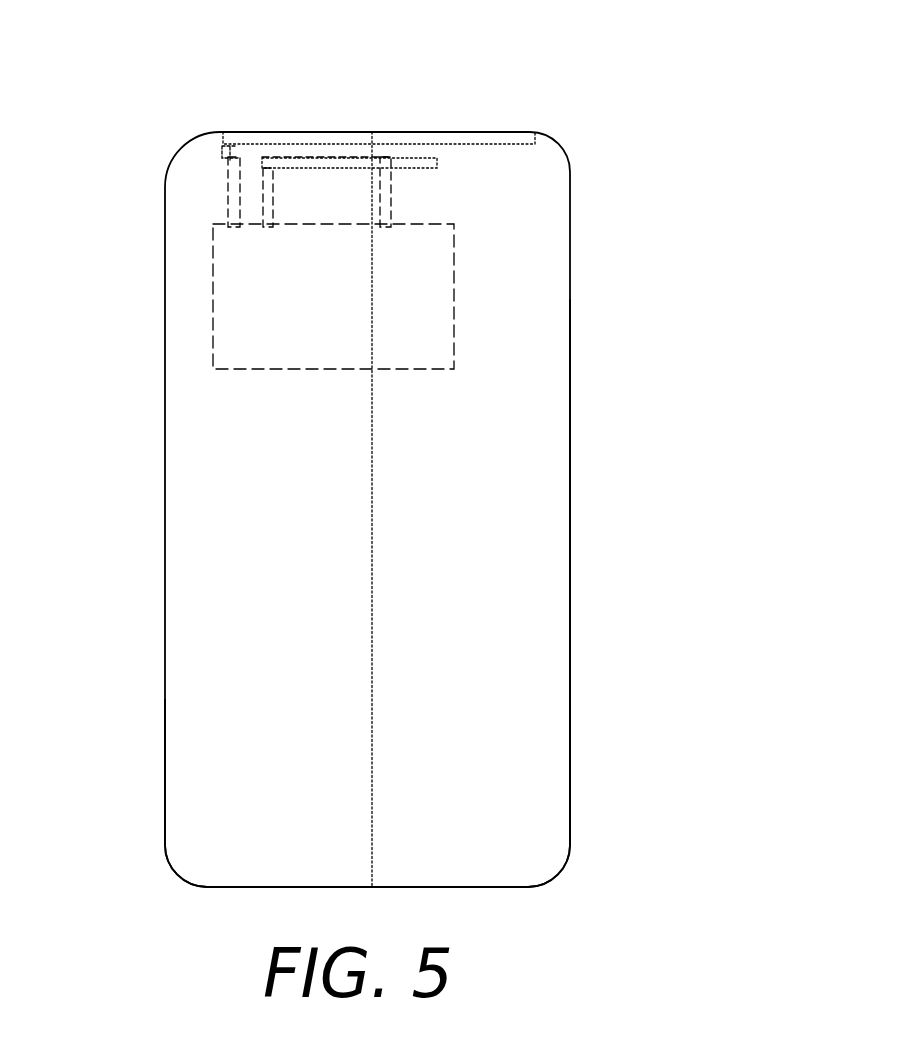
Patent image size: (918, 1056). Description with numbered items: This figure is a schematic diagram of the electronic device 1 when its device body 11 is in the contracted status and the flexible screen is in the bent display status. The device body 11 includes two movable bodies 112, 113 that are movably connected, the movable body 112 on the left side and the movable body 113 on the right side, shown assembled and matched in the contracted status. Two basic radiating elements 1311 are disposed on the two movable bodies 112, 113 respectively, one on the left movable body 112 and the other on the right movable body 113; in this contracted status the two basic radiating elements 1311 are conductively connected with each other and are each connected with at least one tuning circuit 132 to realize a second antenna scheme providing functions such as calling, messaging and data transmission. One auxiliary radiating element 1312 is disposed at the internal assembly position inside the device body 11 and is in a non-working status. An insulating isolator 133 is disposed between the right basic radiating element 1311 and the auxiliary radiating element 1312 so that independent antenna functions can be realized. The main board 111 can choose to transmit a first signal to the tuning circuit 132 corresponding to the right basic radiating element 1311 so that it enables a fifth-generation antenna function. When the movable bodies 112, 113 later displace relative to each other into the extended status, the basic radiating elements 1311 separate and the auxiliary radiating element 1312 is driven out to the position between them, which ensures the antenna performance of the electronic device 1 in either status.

The electronic device 1 is at (167, 97).
The device body 11 is at (557, 562).
The main board 111 is at (418, 326).
The movable body 112 is at (183, 741).
The movable body 113 is at (528, 827).
The basic radiating element 1311 is at (260, 140).
The auxiliary radiating element 1312 is at (362, 163).
The tuning circuit 132 is at (240, 197).
The insulating isolator 133 is at (227, 156).